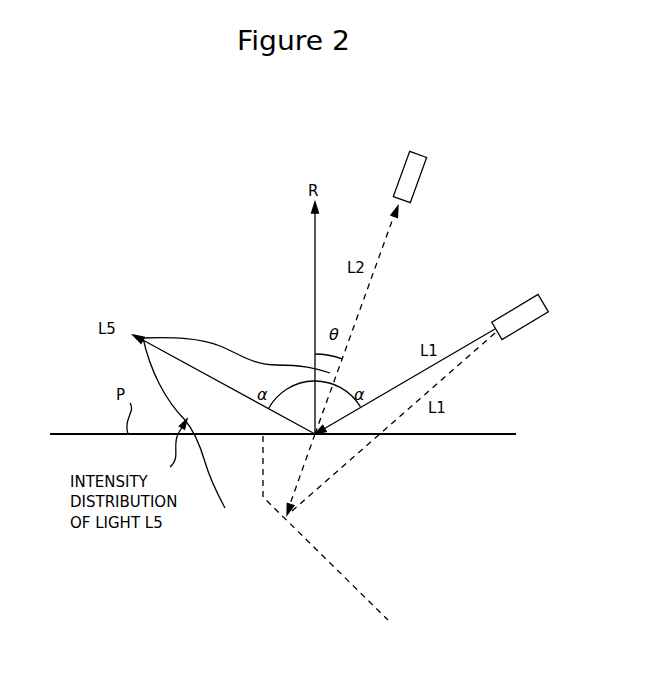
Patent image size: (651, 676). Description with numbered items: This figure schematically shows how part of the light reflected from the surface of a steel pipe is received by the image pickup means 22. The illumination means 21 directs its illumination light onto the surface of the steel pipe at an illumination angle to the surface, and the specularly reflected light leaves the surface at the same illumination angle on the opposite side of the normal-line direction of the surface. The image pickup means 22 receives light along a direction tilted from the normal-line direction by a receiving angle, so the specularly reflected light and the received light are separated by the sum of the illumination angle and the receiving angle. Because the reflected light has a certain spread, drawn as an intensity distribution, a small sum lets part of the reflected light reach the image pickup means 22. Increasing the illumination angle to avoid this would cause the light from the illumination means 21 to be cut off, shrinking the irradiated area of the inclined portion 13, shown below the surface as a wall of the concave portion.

The image pickup means 22 is at (412, 151).
The illumination means 21 is at (507, 318).
The second inclined portion 13 is at (323, 553).